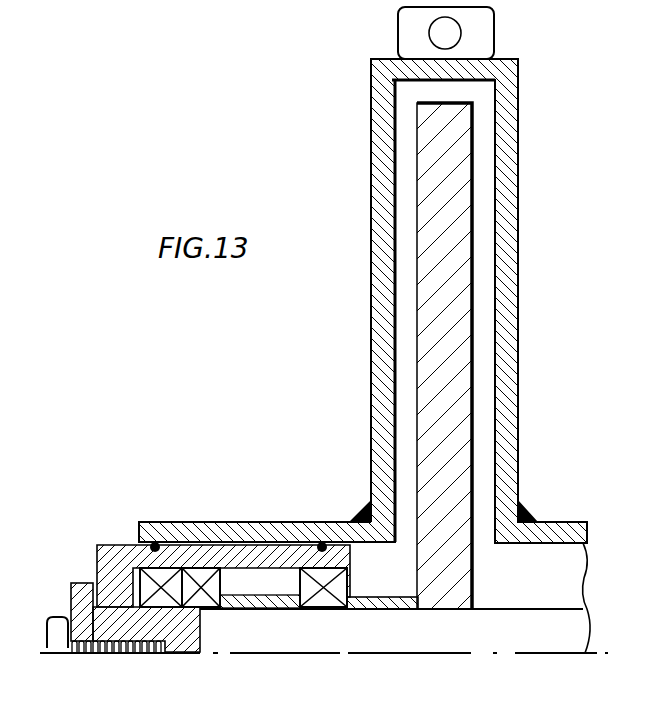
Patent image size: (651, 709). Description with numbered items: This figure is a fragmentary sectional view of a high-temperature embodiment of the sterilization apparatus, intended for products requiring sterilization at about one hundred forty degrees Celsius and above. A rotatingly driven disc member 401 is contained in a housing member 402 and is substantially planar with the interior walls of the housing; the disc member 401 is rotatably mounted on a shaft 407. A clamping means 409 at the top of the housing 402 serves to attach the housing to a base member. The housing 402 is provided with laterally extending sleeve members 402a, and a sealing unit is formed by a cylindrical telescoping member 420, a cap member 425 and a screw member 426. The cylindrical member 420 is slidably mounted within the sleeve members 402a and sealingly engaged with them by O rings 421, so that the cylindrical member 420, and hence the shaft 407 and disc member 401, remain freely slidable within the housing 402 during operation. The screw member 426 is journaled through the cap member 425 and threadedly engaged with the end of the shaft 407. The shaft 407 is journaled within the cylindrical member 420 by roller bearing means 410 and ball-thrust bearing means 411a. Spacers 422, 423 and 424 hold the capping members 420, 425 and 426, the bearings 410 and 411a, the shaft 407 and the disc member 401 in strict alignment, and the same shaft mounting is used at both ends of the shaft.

The clamping means 409 is at (472, 37).
The housing member 402 is at (380, 297).
The disc member 401 is at (447, 265).
The sleeve members 402a is at (278, 532).
The cylindrical telescoping member 420 is at (253, 560).
The O rings 421 is at (158, 541).
The ball-thrust bearing means 411a is at (200, 590).
The roller bearing means 410 is at (320, 575).
The spacer 423 is at (258, 597).
The spacer 422 is at (395, 606).
The spacer 424 is at (197, 607).
The cap member 425 is at (80, 583).
The screw member 426 is at (60, 643).
The shaft 407 is at (407, 632).